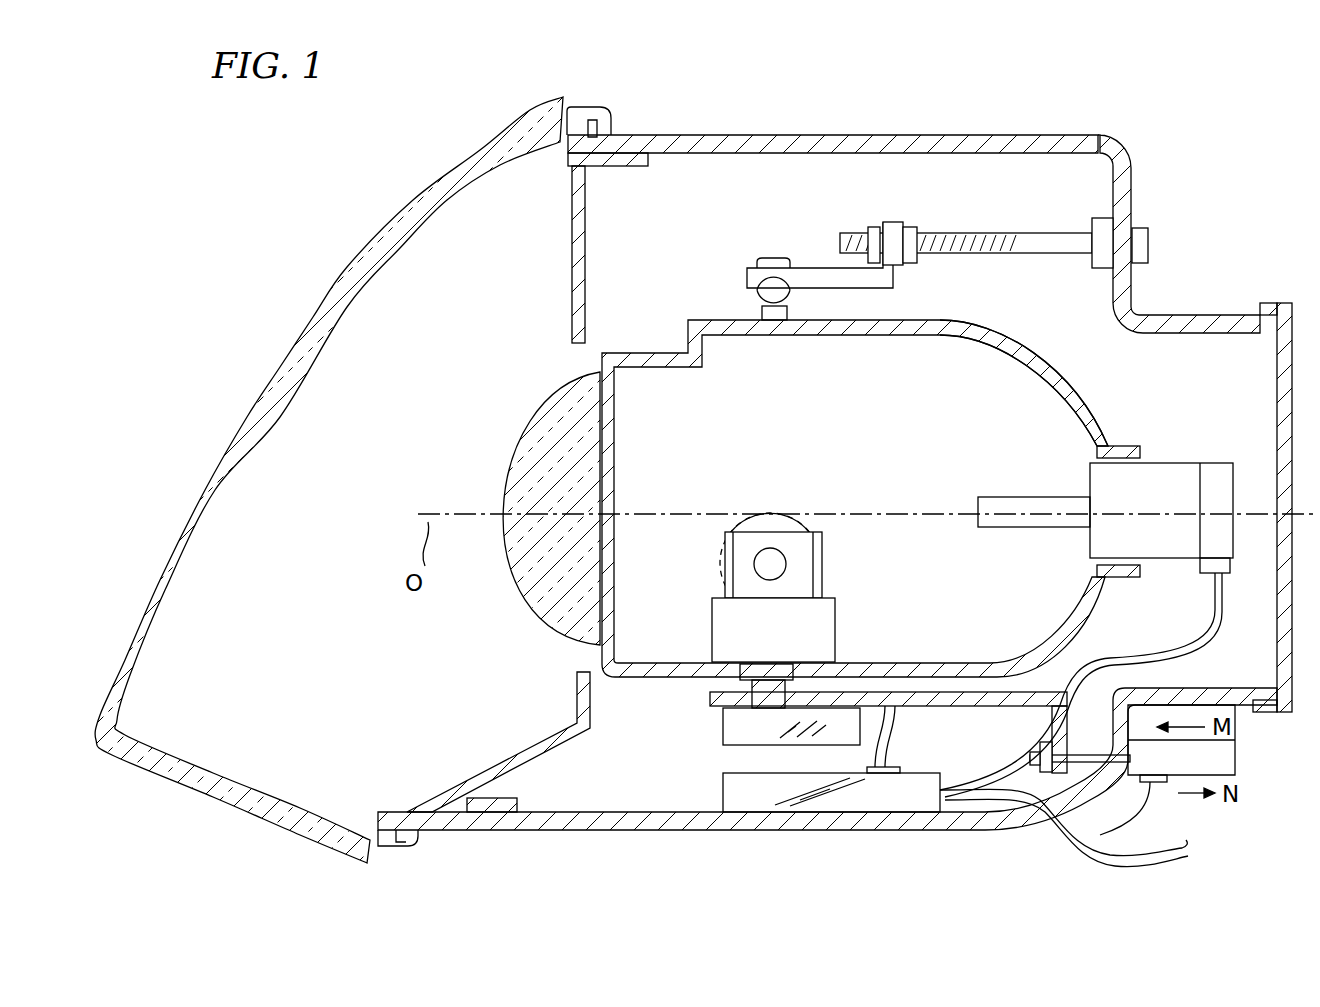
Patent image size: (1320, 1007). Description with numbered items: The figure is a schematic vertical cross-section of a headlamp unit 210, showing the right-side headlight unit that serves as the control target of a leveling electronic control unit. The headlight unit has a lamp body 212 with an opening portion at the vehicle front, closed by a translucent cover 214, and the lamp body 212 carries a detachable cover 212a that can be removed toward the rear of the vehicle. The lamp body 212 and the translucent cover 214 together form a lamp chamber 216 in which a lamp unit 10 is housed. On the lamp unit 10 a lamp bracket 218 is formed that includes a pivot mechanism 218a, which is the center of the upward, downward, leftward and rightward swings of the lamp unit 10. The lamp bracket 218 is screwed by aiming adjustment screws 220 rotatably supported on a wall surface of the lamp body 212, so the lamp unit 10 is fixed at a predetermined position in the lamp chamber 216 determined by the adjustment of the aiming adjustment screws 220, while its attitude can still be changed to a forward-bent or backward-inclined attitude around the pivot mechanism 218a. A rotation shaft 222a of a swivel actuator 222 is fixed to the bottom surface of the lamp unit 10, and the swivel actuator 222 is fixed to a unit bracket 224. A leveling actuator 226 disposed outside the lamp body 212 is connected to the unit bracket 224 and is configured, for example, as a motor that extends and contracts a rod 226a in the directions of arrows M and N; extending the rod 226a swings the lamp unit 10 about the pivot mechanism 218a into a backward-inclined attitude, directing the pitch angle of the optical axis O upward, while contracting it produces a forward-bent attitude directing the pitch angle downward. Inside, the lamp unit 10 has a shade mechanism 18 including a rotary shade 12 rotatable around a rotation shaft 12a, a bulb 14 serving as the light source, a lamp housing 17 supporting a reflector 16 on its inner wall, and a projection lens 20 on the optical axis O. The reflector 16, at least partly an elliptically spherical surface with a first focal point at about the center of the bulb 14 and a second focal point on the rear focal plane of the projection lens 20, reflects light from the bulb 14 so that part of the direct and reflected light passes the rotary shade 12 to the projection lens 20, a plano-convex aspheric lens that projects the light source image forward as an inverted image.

The lamp unit 10 is at (655, 346).
The rotary shade 12 is at (782, 521).
The rotation shaft 12a is at (787, 566).
The bulb 14 is at (1020, 503).
The reflector 16 is at (948, 340).
The lamp housing 17 is at (1033, 361).
The shade mechanism 18 is at (772, 502).
The projection lens 20 is at (532, 430).
The headlamp unit 210 is at (960, 131).
The lamp body 212 is at (800, 135).
The detachable cover 212a is at (1273, 303).
The translucent cover 214 is at (383, 246).
The lamp chamber 216 is at (515, 297).
The lamp bracket 218 is at (823, 268).
The pivot mechanism 218a is at (759, 296).
The aiming adjustment screws 220 is at (1050, 247).
The swivel actuator 222 is at (725, 725).
The rotation shaft 222a is at (757, 689).
The unit bracket 224 is at (918, 700).
The leveling actuator 226 is at (1233, 758).
The rod 226a is at (1083, 748).